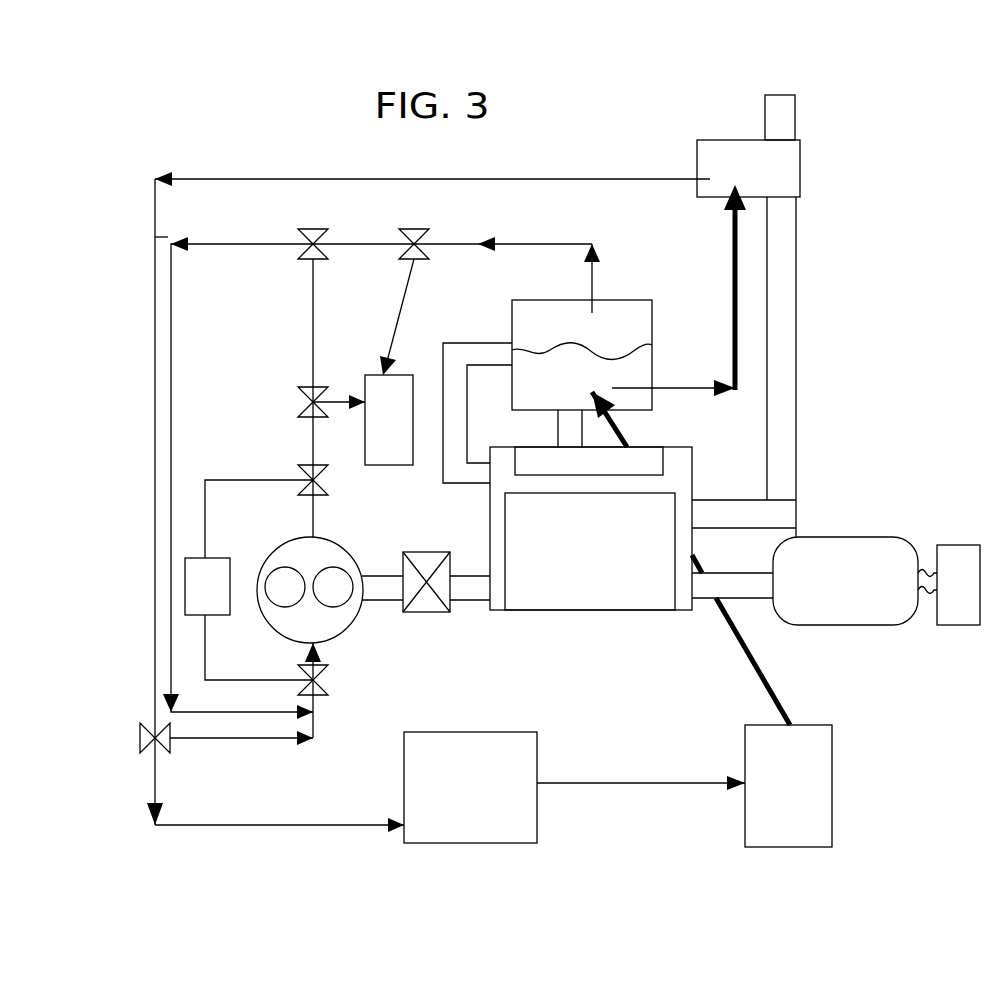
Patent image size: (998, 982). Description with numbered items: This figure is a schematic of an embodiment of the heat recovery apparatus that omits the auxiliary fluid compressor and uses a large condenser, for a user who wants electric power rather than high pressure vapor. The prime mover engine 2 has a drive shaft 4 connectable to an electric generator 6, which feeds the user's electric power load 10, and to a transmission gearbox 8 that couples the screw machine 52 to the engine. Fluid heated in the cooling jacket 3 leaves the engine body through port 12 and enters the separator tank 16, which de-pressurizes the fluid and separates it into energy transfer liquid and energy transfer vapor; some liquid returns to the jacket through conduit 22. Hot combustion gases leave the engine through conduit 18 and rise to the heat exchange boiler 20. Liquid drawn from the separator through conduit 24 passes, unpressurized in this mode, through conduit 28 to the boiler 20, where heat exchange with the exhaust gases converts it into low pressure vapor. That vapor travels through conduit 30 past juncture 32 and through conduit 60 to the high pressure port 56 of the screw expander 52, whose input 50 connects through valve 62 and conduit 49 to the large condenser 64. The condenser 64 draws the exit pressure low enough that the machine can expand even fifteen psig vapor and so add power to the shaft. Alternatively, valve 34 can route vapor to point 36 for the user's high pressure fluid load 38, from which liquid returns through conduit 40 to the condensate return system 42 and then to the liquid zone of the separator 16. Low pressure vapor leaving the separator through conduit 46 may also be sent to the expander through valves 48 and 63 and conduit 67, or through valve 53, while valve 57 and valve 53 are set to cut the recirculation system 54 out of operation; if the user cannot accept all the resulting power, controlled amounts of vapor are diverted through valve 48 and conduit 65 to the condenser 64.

The engine 2 is at (580, 518).
The jacket 3 is at (490, 517).
The drive shaft 4 is at (443, 386).
The electric generator 6 is at (838, 607).
The transmission gearbox 8 is at (422, 598).
The user's electric power load 10 is at (958, 612).
The port 12 is at (502, 447).
The separator tank 16 is at (652, 355).
The conduit 18 is at (780, 445).
The heat exchange boiler 20 is at (697, 152).
The conduit 22 is at (560, 431).
The conduit 24 is at (683, 388).
The conduit 28 is at (735, 290).
The conduit 30 is at (166, 236).
The juncture 32 is at (155, 697).
The valve 34 is at (140, 730).
The point 36 is at (170, 825).
The user's high pressure fluid load 38 is at (467, 732).
The conduit 40 is at (655, 783).
The condensate return system 42 is at (826, 798).
The conduit 46 is at (577, 243).
The valve 48 is at (414, 229).
The conduit 49 is at (342, 403).
The input 50 is at (315, 537).
The screw machine 52 is at (340, 622).
The valve 53 is at (305, 468).
The recirculation system 54 is at (200, 570).
The exit port 56 is at (318, 645).
The valve 57 is at (300, 672).
The conduit 60 is at (240, 738).
The valve 62 is at (316, 390).
The valve 63 is at (313, 229).
The condenser 64 is at (398, 465).
The conduit 65 is at (400, 305).
The conduit 67 is at (171, 392).